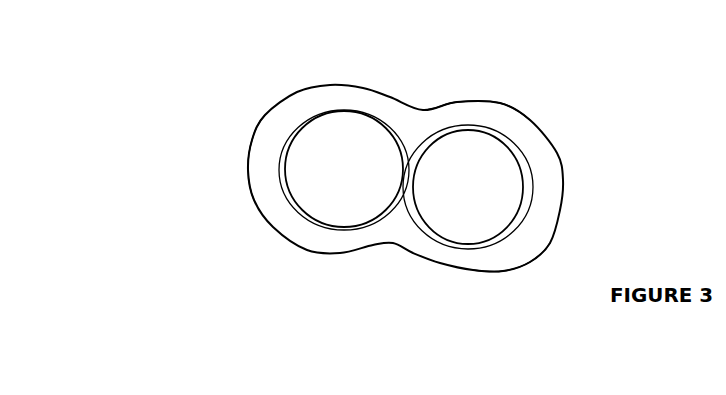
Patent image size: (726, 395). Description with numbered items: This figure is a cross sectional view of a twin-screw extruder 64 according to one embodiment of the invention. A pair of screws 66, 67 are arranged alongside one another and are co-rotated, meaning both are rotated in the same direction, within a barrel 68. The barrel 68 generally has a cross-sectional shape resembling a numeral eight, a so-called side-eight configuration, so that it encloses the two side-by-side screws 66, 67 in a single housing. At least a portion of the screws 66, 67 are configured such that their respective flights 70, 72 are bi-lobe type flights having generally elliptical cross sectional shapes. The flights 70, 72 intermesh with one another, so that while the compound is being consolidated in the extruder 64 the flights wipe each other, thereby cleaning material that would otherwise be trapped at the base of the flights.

The twin-screw extruder 64 is at (569, 137).
The screw 66 is at (465, 116).
The screw 67 is at (327, 106).
The barrel 68 is at (503, 271).
The flight 70 is at (530, 192).
The flight 72 is at (283, 147).